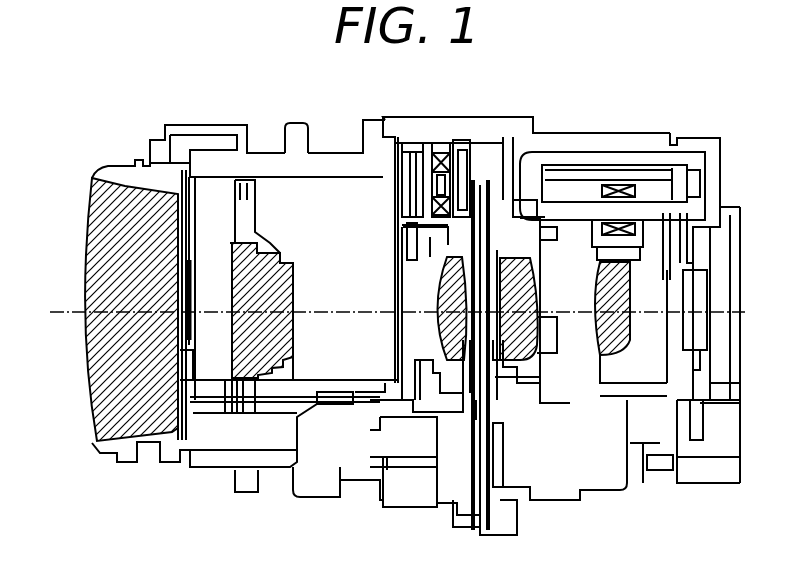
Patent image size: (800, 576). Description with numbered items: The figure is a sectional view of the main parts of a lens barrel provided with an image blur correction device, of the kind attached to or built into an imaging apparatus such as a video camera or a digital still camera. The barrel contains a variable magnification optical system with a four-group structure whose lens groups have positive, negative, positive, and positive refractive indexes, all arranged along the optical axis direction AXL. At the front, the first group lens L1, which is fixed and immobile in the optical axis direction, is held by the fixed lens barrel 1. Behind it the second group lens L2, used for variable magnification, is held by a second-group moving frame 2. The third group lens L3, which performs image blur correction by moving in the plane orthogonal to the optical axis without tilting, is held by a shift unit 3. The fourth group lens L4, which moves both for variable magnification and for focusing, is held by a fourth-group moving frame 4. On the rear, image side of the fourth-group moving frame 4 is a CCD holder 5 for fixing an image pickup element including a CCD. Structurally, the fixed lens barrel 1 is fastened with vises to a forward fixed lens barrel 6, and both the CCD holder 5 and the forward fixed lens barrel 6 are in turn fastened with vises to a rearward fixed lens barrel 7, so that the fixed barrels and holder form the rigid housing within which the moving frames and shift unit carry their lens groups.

The fixed lens barrel 1 is at (123, 167).
The second-group moving frame 2 is at (252, 200).
The shift unit 3 is at (450, 239).
The fourth-group moving frame 4 is at (610, 253).
The CCD holder 5 is at (697, 137).
The forward fixed lens barrel 6 is at (297, 122).
The rearward fixed lens barrel 7 is at (461, 118).
The first group lens L1 is at (103, 250).
The second group lens L2 is at (288, 300).
The third group lens L3 is at (453, 271).
The fourth group lens L4 is at (612, 284).
The optical axis direction AXL is at (62, 313).